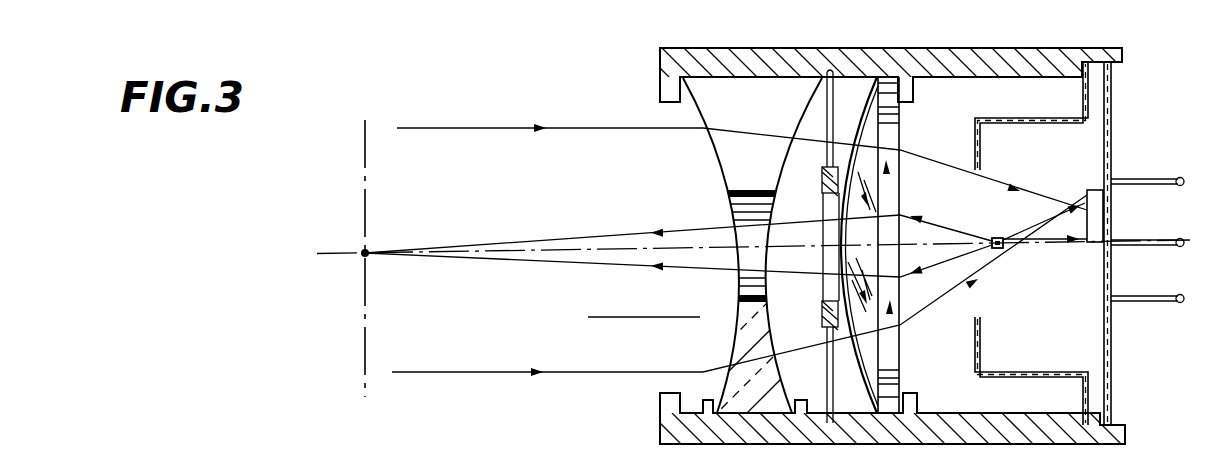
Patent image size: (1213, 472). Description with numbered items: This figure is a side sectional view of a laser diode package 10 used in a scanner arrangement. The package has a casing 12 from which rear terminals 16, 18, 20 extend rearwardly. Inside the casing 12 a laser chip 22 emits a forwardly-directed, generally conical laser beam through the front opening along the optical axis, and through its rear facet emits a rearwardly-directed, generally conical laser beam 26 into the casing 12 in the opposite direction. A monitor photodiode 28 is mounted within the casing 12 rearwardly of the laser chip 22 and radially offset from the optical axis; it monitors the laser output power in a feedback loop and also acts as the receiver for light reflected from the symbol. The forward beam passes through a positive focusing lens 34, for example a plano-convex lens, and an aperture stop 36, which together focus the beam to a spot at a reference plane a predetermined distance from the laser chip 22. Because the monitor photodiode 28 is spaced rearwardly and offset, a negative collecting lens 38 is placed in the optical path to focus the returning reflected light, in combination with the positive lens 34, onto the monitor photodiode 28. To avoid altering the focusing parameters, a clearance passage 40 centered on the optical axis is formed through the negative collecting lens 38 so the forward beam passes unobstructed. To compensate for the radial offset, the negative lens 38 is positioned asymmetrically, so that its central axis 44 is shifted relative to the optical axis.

The laser diode package 10 is at (1140, 100).
The casing 12 is at (1040, 118).
The rear terminal 16 is at (1147, 179).
The rear terminal 18 is at (1143, 303).
The rear terminal 20 is at (1168, 238).
The laser chip 22 is at (1003, 234).
The rearwardly-directed laser beam 26 is at (1063, 246).
The monitor photodiode 28 is at (1086, 190).
The positive focusing lens 34 is at (893, 132).
The aperture stop 36 is at (828, 183).
The negative collecting lens 38 is at (726, 157).
The clearance passage 40 is at (612, 125).
The central axis 44 is at (709, 321).